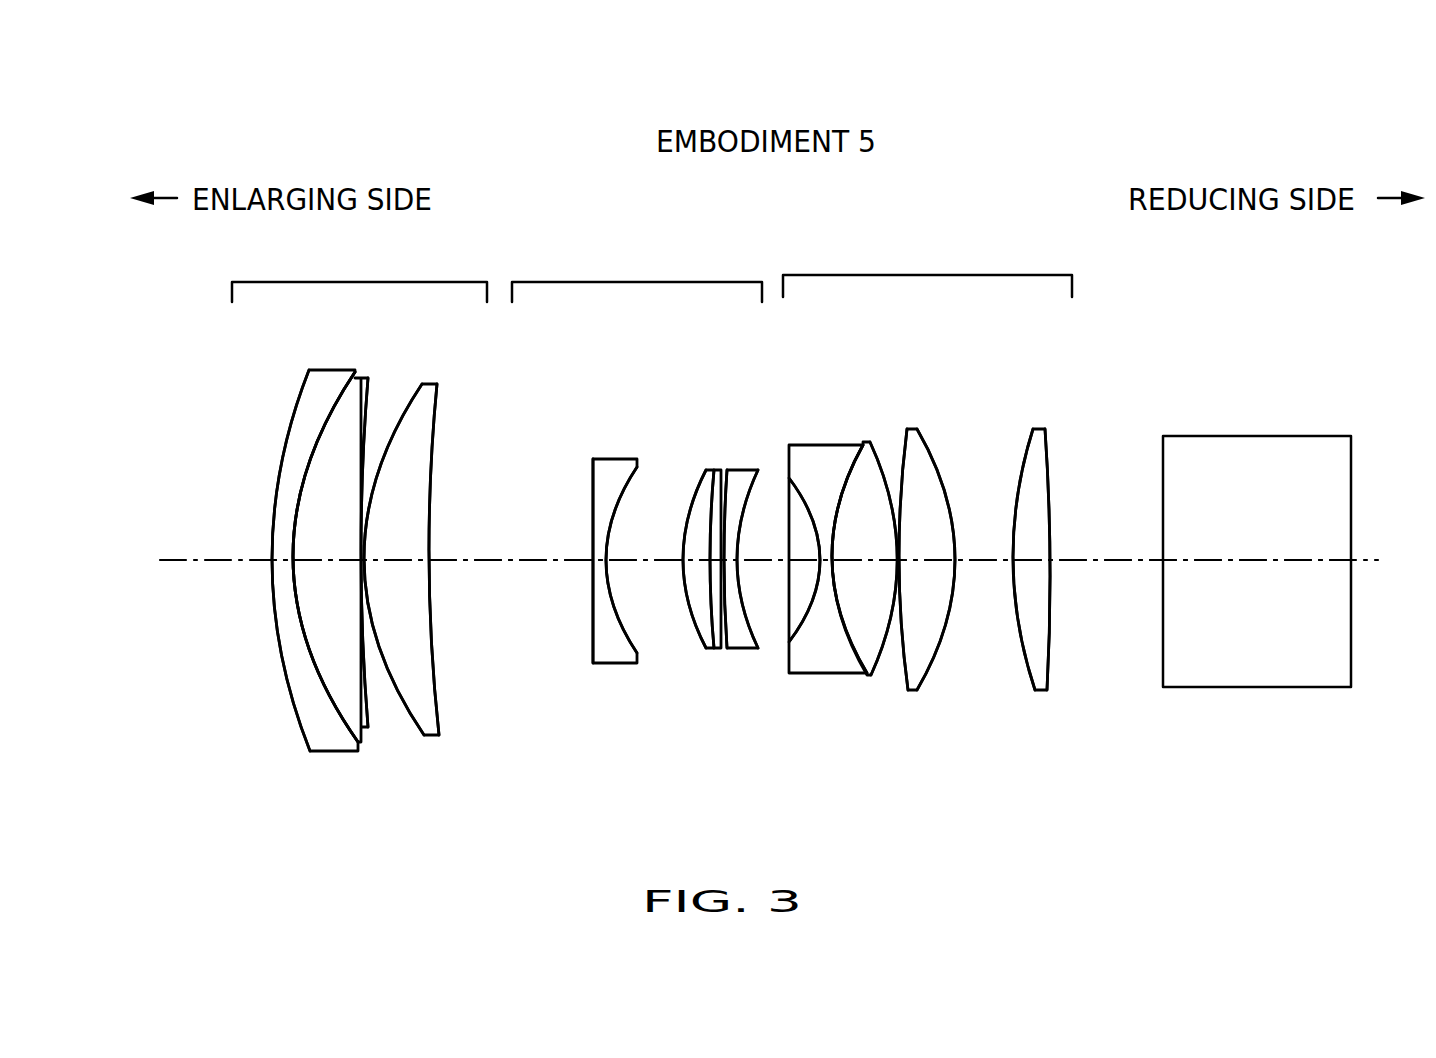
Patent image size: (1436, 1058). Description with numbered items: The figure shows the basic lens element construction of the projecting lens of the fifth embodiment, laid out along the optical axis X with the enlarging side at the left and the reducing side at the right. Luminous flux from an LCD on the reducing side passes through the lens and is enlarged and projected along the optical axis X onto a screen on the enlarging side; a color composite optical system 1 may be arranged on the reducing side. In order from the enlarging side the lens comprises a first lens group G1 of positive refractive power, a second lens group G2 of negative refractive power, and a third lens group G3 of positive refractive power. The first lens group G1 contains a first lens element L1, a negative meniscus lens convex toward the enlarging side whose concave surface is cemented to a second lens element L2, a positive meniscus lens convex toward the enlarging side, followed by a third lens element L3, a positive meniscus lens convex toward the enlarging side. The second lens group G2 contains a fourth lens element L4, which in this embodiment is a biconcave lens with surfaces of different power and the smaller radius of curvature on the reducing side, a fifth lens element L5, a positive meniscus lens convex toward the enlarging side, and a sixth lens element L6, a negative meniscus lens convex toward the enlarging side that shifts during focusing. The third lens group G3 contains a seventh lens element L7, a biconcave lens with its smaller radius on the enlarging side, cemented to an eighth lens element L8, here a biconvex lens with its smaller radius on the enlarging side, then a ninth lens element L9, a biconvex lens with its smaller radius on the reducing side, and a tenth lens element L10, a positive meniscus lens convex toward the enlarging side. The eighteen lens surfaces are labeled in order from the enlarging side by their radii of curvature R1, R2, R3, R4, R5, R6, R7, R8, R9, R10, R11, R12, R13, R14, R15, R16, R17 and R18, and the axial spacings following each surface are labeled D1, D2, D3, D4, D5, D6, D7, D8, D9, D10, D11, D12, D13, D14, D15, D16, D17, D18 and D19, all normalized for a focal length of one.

The optical axis X is at (206, 563).
The color composite optical system 1 is at (1262, 688).
The first lens group G1 is at (363, 540).
The second lens group G2 is at (657, 506).
The third lens group G3 is at (948, 510).
The first lens element L1 is at (322, 752).
The second lens element L2 is at (366, 728).
The third lens element L3 is at (441, 736).
The fourth lens element L4 is at (607, 664).
The fifth lens element L5 is at (708, 649).
The sixth lens element L6 is at (747, 649).
The seventh lens element L7 is at (824, 674).
The eighth lens element L8 is at (871, 678).
The ninth lens element L9 is at (913, 691).
The tenth lens element L10 is at (1039, 691).
The radius of curvature of lens surface R1 is at (299, 397).
The radius of curvature of lens surface R2 is at (339, 397).
The radius of curvature of lens surface R3 is at (368, 390).
The radius of curvature of lens surface R4 is at (397, 398).
The radius of curvature of lens surface R5 is at (440, 397).
The radius of curvature of lens surface R6 is at (593, 472).
The radius of curvature of lens surface R7 is at (638, 468).
The radius of curvature of lens surface R8 is at (692, 488).
The radius of curvature of lens surface R9 is at (718, 470).
The radius of curvature of lens surface R10 is at (727, 470).
The radius of curvature of lens surface R11 is at (753, 482).
The radius of curvature of lens surface R12 is at (789, 445).
The radius of curvature of lens surface R13 is at (831, 443).
The radius of curvature of lens surface R14 is at (880, 445).
The radius of curvature of lens surface R15 is at (906, 440).
The radius of curvature of lens surface R16 is at (926, 438).
The radius of curvature of lens surface R17 is at (1031, 440).
The radius of curvature of lens surface R18 is at (1060, 446).
The axial spacing D1 is at (282, 557).
The axial spacing D2 is at (348, 557).
The axial spacing D3 is at (367, 552).
The axial spacing D4 is at (380, 562).
The axial spacing D5 is at (452, 558).
The axial spacing D6 is at (603, 568).
The axial spacing D7 is at (640, 562).
The axial spacing D8 is at (699, 560).
The axial spacing D9 is at (720, 575).
The axial spacing D10 is at (733, 590).
The axial spacing D11 is at (766, 563).
The axial spacing D12 is at (825, 558).
The axial spacing D13 is at (880, 575).
The axial spacing D14 is at (893, 560).
The axial spacing D15 is at (952, 562).
The axial spacing D16 is at (997, 562).
The axial spacing D17 is at (1045, 583).
The axial spacing D18 is at (1107, 560).
The axial spacing D19 is at (1243, 560).